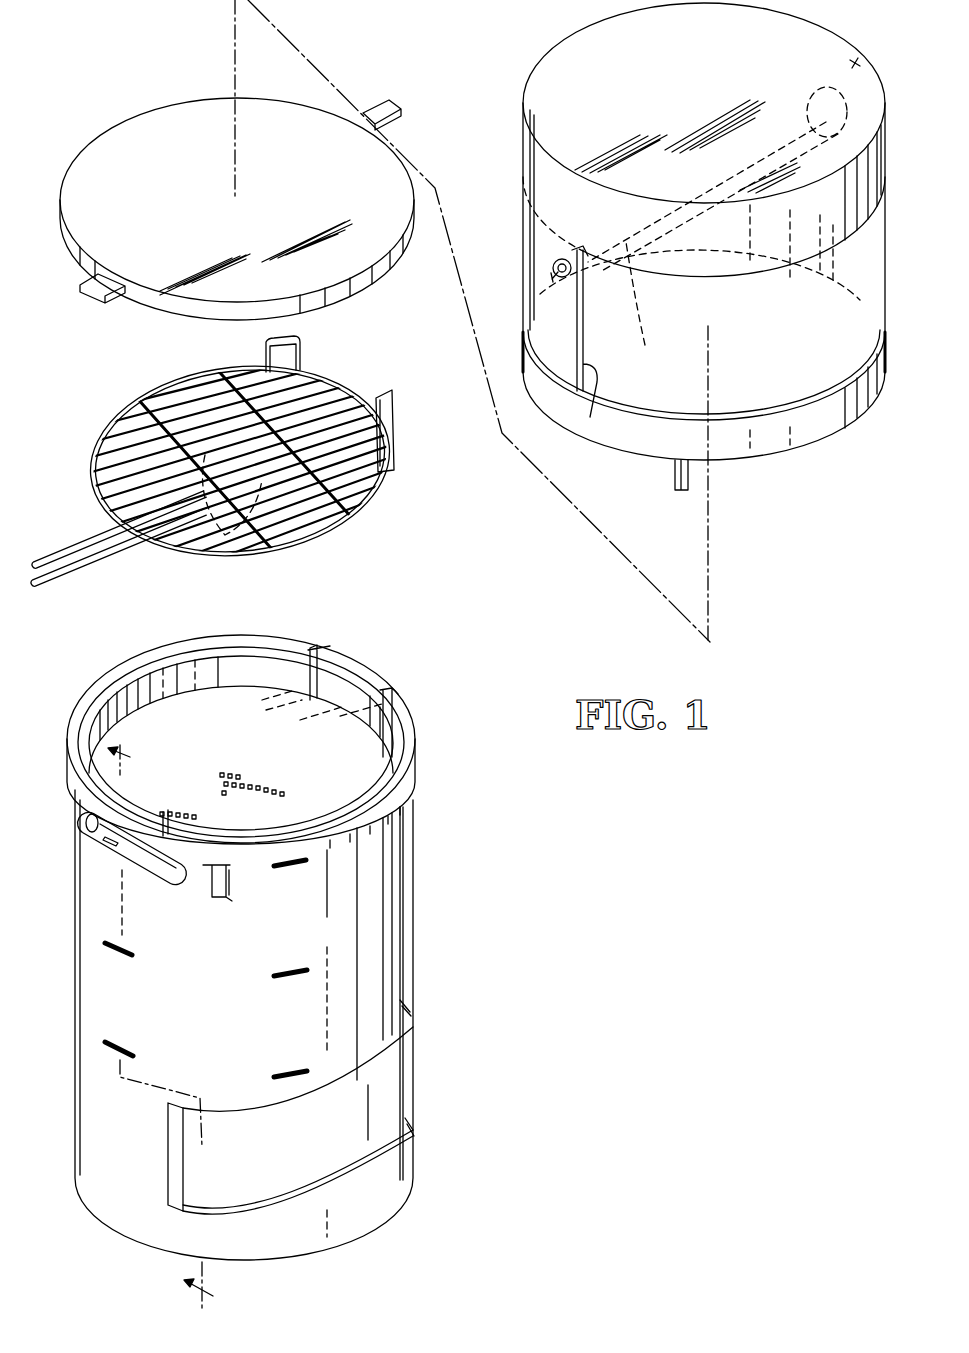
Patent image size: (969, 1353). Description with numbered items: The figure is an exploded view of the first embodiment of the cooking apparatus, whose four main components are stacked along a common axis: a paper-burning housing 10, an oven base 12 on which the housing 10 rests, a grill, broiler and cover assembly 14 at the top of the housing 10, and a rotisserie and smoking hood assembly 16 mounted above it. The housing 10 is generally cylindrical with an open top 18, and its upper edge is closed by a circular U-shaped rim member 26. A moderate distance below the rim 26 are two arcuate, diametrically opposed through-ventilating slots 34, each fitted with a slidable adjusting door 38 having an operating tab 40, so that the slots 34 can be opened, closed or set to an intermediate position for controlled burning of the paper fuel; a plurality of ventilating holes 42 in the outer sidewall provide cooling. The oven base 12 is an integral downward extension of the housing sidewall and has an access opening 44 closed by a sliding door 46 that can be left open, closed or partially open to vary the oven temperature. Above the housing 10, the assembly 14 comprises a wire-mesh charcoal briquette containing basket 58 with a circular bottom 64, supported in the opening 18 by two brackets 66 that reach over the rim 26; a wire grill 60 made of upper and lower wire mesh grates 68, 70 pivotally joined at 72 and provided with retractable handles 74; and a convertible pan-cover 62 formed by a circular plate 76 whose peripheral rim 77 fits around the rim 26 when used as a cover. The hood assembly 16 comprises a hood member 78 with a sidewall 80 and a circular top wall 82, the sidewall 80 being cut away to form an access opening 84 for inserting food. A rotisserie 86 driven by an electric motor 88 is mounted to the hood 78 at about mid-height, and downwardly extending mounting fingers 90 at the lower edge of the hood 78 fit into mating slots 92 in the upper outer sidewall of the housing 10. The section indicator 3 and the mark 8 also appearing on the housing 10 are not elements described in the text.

The paper-burning housing 10 is at (253, 955).
The oven base 12 is at (427, 1100).
The grill, broiler and cover assembly 14 is at (388, 490).
The rotisserie and smoking hood assembly 16 is at (673, 271).
The open top 18 is at (268, 673).
The U-shaped rim member 26 is at (225, 636).
The through-ventilating slots 34 is at (84, 829).
The adjusting doors 38 is at (166, 866).
The operating tab 40 is at (107, 848).
The ventilating holes 42 is at (120, 1053).
The access opening 44 is at (178, 1208).
The sliding door 46 is at (267, 1160).
The charcoal briquette containing basket 58 is at (215, 750).
The wire grill 60 is at (233, 472).
The convertible pan-cover 62 is at (409, 264).
The circular bottom 64 is at (405, 765).
The brackets 66 is at (328, 652).
The upper wire mesh grate 68 is at (93, 470).
The lower wire mesh grate 70 is at (100, 503).
The pivot joint 72 is at (300, 350).
The retractable handles 74 is at (80, 575).
The circular plate 76 is at (166, 200).
The peripheral rim 77 is at (205, 310).
The hood member 78 is at (673, 186).
The sidewall 80 is at (555, 220).
The circular top wall 82 is at (645, 90).
The access opening 84 is at (390, 112).
The rotisserie 86 is at (644, 306).
The electric motor 88 is at (827, 85).
The mounting fingers 90 is at (683, 490).
The mating slots 92 is at (226, 888).
The section line 3- 3 is at (168, 1029).
The reference 8 is at (197, 1163).